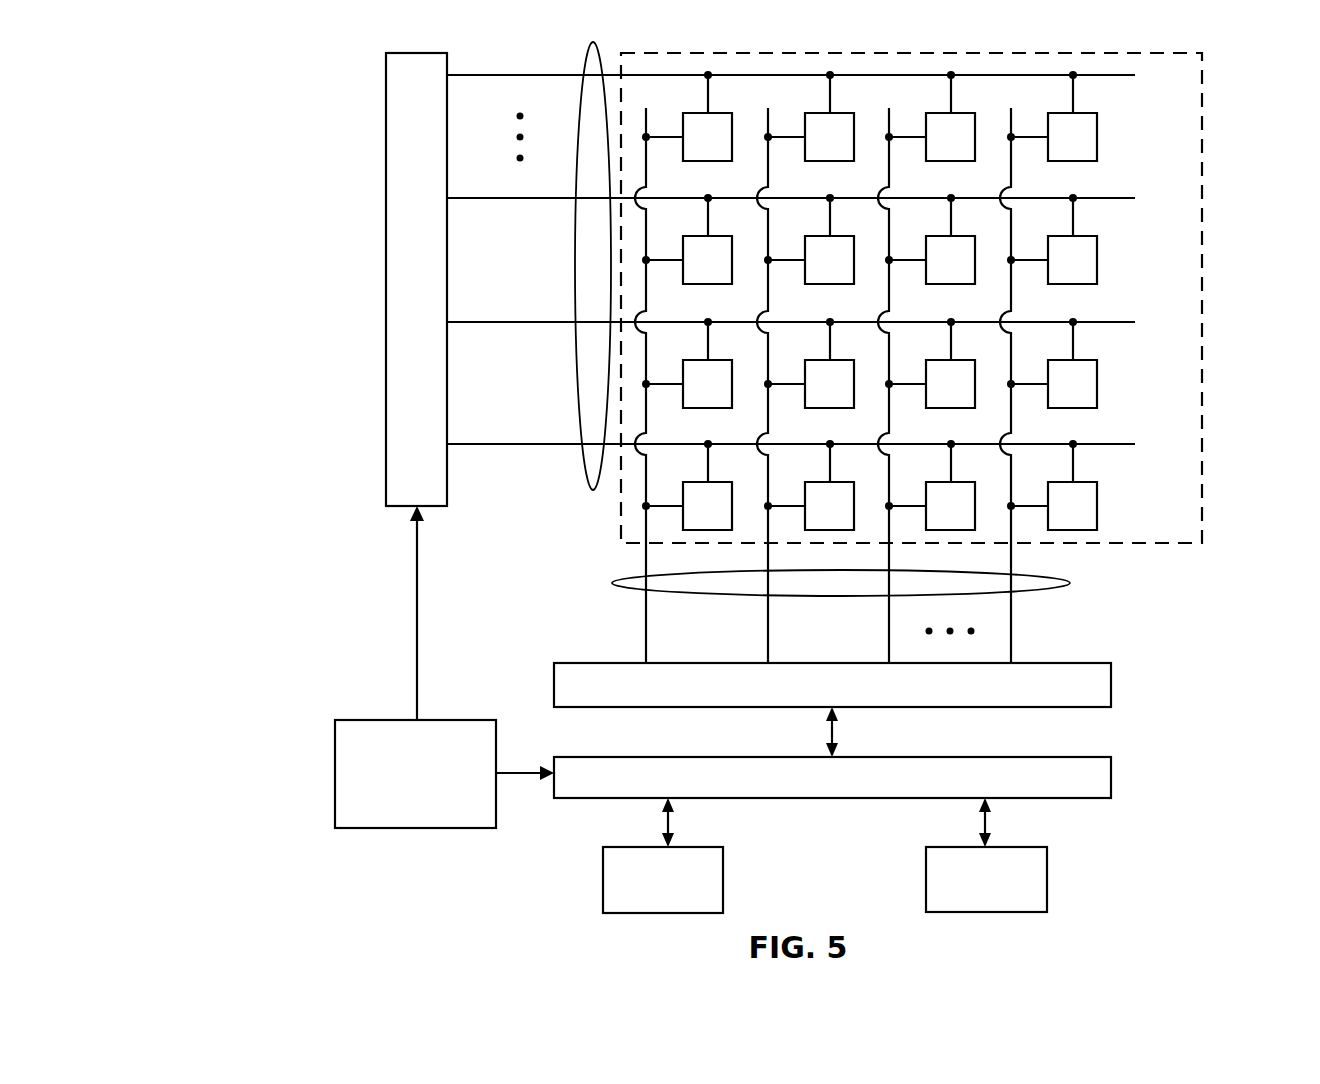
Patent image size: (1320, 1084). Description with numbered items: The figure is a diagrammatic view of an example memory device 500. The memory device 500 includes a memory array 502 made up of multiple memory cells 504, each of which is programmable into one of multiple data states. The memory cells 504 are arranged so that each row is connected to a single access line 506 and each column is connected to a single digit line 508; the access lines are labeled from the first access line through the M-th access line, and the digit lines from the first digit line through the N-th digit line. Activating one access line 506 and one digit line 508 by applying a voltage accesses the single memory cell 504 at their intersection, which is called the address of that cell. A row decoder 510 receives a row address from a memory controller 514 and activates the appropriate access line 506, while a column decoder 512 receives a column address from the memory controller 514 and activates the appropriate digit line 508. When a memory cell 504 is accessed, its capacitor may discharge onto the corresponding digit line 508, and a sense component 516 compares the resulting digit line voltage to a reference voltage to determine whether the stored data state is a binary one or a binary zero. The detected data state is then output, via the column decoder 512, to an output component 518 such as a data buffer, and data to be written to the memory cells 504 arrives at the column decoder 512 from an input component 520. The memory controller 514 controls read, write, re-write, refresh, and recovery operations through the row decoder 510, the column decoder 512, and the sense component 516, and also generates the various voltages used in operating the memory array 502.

The memory device 500 is at (222, 73).
The memory array 502 is at (867, 352).
The memory cell 504 is at (1097, 262).
The access line 506 is at (593, 486).
The digit line 508 is at (1068, 585).
The row decoder 510 is at (386, 408).
The column decoder 512 is at (1111, 785).
The memory controller 514 is at (417, 828).
The sense component 516 is at (1111, 690).
The output component 518 is at (1047, 872).
The input component 520 is at (723, 866).